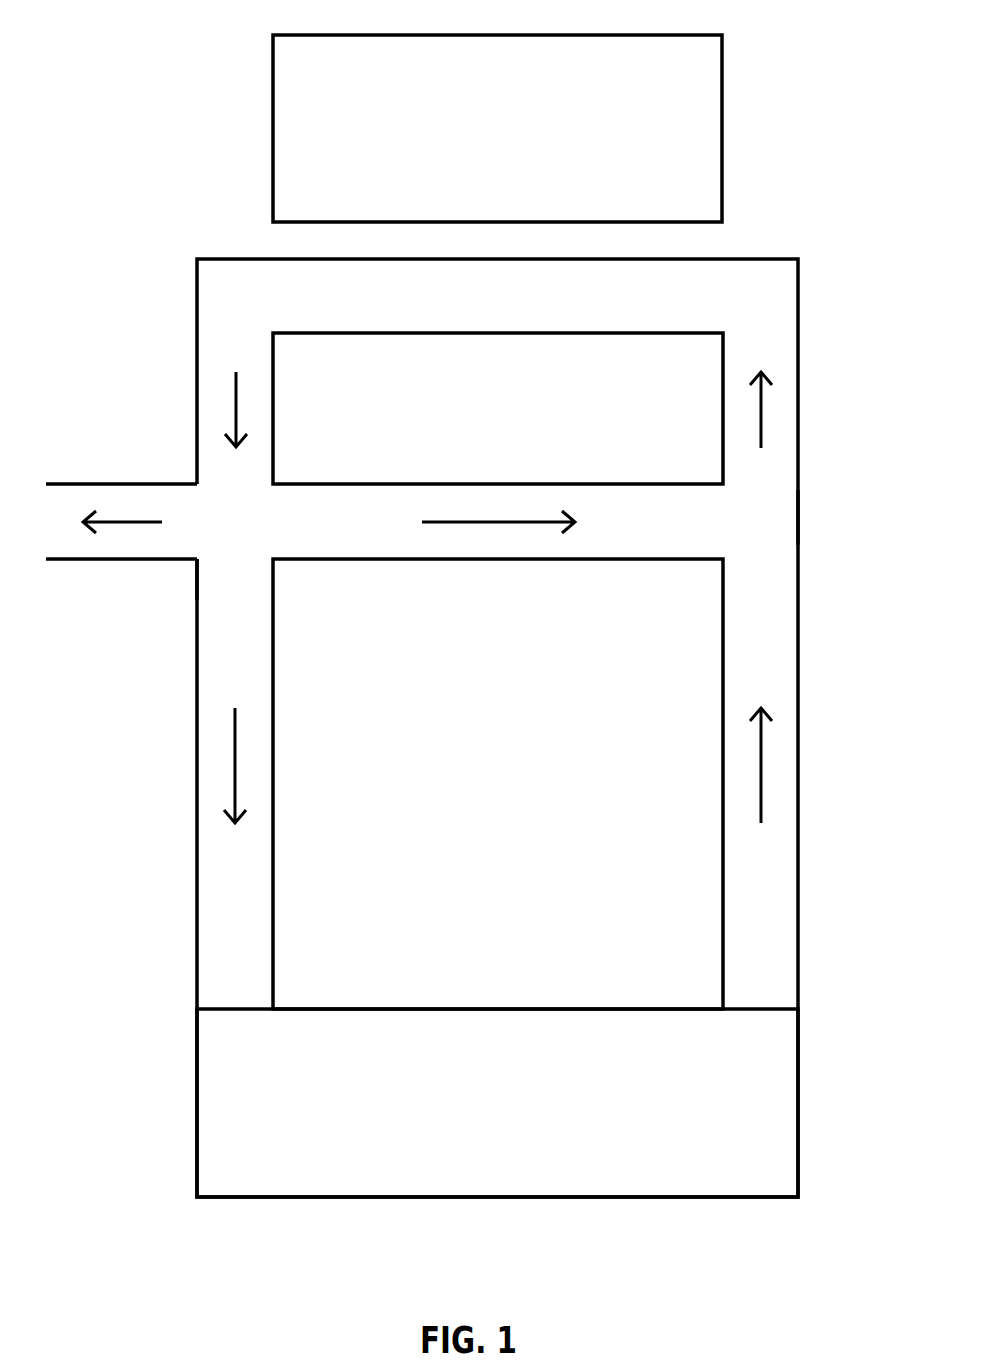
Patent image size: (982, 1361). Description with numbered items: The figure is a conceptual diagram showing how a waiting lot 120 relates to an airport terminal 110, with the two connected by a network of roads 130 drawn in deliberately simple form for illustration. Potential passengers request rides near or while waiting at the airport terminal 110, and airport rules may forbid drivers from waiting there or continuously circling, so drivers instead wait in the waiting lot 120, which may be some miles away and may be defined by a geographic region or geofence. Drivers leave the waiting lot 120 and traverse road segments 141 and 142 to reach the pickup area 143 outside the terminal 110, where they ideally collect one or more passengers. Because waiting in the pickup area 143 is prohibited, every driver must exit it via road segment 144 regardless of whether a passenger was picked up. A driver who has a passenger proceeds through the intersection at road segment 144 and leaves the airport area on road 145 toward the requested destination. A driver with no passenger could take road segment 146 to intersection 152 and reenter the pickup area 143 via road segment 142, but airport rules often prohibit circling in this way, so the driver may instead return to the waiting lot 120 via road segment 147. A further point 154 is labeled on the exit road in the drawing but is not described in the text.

The airport terminal 110 is at (519, 162).
The waiting lot 120 is at (520, 1138).
The network of roads 130 is at (197, 277).
The road segment 141 is at (777, 755).
The road segment 142 is at (778, 348).
The pickup area 143 is at (525, 320).
The road segment 144 is at (217, 408).
The road 145 is at (118, 530).
The road segment 146 is at (500, 547).
The road segment 147 is at (210, 765).
The intersection 152 is at (777, 517).
The road point 154 is at (235, 518).